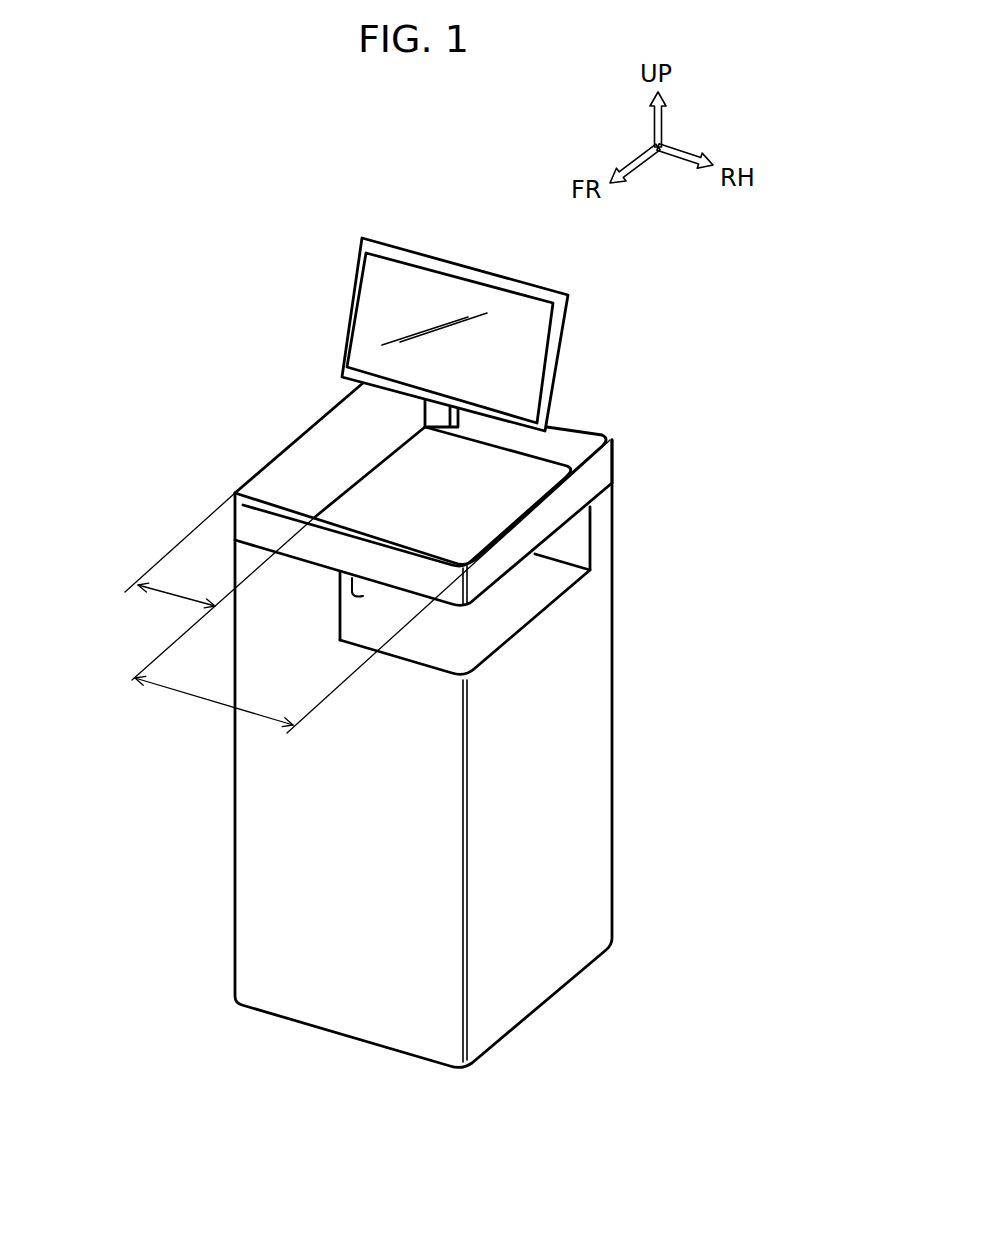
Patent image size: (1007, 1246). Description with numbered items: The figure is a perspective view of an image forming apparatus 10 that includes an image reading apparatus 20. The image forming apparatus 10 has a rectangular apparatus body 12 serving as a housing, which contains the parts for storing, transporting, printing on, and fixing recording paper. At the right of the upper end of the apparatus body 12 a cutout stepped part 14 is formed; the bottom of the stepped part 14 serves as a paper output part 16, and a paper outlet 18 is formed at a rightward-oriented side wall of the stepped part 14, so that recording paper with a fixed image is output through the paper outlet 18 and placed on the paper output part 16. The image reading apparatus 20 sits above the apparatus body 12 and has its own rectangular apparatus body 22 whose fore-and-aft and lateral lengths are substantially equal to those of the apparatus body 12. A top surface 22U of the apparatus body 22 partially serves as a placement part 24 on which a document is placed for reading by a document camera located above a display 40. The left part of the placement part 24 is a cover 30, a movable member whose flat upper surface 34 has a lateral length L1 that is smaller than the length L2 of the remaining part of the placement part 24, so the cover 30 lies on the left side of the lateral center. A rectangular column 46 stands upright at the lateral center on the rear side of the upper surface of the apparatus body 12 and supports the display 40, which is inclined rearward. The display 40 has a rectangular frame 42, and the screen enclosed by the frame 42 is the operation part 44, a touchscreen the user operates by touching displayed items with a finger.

The image forming apparatus 10 is at (623, 647).
The apparatus body 12 is at (268, 858).
The stepped part 14 is at (426, 645).
The paper output part 16 is at (488, 621).
The paper outlet 18 is at (380, 583).
The image reading apparatus 20 is at (235, 490).
The apparatus body 22 is at (600, 475).
The top surface 22U is at (580, 437).
The placement part 24 is at (502, 506).
The cover 30 is at (297, 480).
The upper surface 34 is at (333, 466).
The display 40 is at (438, 252).
The frame 42 is at (360, 240).
The operation part 44 is at (375, 309).
The column 46 is at (435, 425).
The length of the upper surface L1 is at (168, 596).
The length of the remaining part of the placement part L2 is at (209, 700).